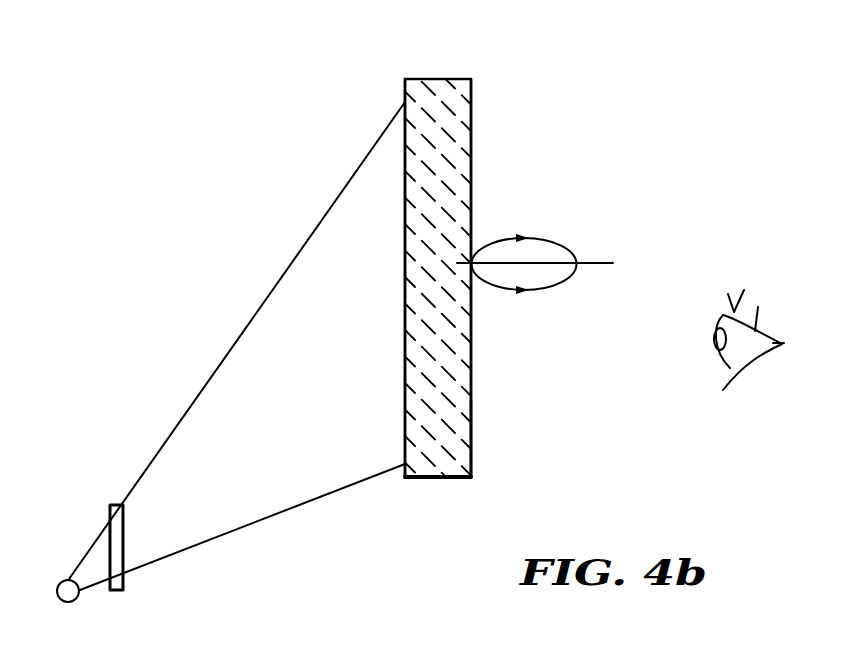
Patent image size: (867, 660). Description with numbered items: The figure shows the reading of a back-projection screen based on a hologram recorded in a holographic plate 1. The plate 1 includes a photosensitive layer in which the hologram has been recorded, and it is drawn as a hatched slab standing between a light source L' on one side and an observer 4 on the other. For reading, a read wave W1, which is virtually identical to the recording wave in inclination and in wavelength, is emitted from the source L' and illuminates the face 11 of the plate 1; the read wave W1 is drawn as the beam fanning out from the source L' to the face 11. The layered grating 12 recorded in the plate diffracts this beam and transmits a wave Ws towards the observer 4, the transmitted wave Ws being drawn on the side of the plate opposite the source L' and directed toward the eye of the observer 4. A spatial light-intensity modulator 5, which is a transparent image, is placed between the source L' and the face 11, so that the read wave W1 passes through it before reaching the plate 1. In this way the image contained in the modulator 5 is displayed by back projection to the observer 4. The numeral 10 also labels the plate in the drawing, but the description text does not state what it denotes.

The holographic plate 1 is at (437, 80).
The front surface of screen 10 is at (471, 118).
The face 11 is at (405, 133).
The layered grating 12 is at (471, 431).
The spatial light-intensity modulator 5 is at (118, 506).
The source L' is at (59, 559).
The read wave W1 is at (263, 512).
The transmitted wave Ws is at (540, 239).
The observer 4 is at (730, 323).